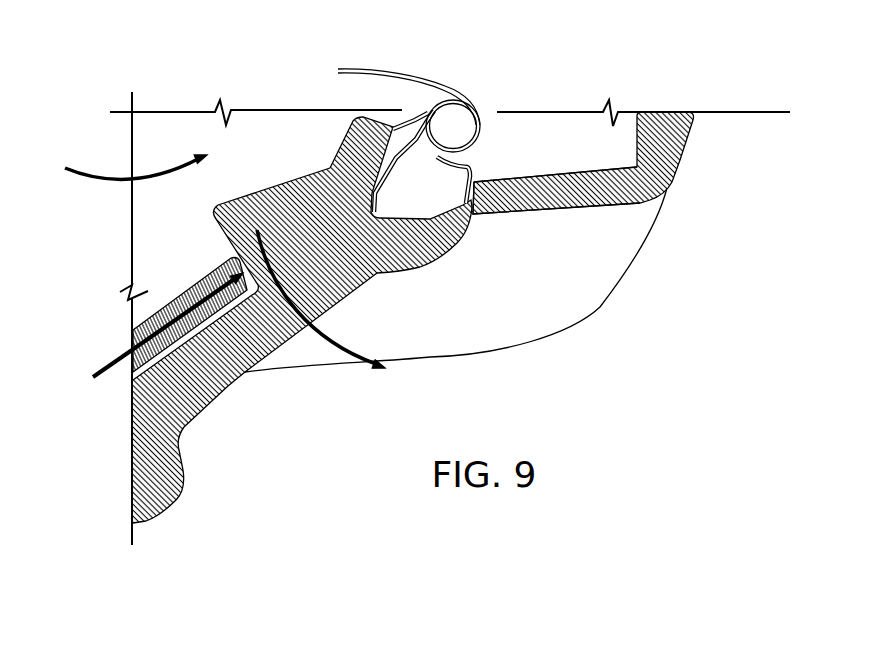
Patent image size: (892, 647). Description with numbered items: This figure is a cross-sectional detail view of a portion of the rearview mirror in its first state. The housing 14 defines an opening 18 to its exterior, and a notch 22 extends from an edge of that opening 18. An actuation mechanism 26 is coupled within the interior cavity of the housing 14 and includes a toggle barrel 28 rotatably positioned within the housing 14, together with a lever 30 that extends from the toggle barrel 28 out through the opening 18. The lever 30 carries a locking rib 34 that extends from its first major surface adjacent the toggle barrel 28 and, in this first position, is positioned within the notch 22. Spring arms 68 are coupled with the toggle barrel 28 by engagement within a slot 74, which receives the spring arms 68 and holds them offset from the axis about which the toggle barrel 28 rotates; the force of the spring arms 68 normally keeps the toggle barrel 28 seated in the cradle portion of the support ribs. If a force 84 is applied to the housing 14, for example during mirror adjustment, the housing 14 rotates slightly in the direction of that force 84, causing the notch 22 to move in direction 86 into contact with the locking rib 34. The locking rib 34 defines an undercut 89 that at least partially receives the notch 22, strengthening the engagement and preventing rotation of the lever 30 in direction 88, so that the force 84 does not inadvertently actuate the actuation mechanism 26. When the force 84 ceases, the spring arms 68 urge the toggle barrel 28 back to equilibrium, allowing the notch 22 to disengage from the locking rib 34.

The housing 14 is at (677, 132).
The opening 18 is at (477, 233).
The notch 22 is at (230, 263).
The actuation mechanism 26 is at (293, 152).
The toggle barrel 28 is at (357, 148).
The lever 30 is at (228, 365).
The locking rib 34 is at (247, 217).
The spring arms 68 is at (466, 88).
The slot 74 is at (420, 183).
The force 84 is at (100, 173).
The direction 86 is at (120, 348).
The direction 88 is at (343, 340).
The undercut 89 is at (218, 240).